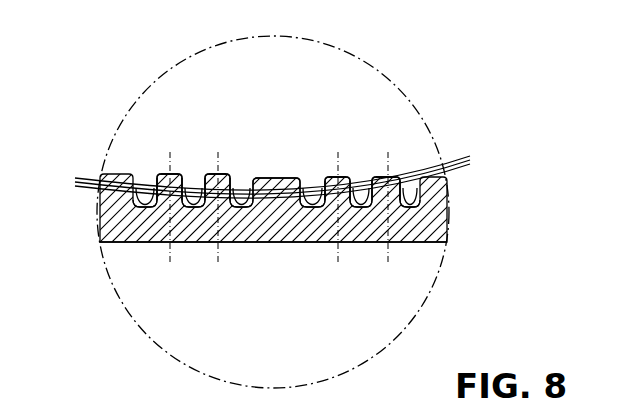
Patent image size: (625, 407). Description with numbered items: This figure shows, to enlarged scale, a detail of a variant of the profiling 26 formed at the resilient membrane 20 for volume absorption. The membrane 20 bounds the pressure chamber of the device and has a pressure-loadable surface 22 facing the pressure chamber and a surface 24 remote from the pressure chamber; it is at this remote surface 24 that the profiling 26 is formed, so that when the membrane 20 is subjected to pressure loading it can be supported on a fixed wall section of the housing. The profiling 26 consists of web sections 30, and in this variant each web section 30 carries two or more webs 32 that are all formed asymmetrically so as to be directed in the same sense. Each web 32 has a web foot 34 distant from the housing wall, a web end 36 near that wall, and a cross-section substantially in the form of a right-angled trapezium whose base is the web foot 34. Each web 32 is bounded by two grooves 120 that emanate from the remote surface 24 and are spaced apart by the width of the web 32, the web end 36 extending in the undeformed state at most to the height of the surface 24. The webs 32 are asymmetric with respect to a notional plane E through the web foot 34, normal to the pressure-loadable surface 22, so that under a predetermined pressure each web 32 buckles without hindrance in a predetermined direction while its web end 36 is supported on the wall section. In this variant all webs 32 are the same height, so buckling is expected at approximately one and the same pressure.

The resilient membrane 20 is at (449, 213).
The pressure-loadable surface 22 is at (270, 243).
The surface remote from the pressure chamber 24 is at (279, 178).
The profiling 26 is at (127, 139).
The web section 30 is at (215, 172).
The web 32 is at (214, 173).
The web foot 34 is at (148, 208).
The web end 36 is at (164, 172).
The groove 120 is at (278, 170).
The notional plane E is at (218, 258).